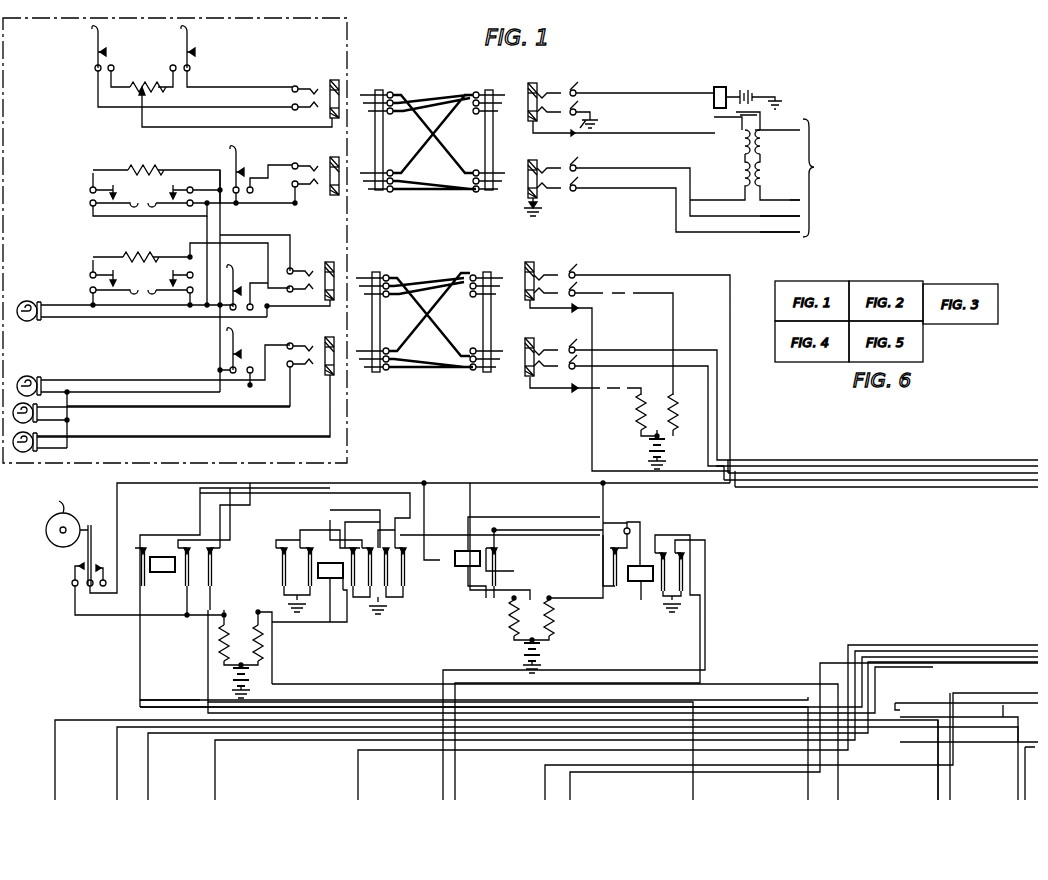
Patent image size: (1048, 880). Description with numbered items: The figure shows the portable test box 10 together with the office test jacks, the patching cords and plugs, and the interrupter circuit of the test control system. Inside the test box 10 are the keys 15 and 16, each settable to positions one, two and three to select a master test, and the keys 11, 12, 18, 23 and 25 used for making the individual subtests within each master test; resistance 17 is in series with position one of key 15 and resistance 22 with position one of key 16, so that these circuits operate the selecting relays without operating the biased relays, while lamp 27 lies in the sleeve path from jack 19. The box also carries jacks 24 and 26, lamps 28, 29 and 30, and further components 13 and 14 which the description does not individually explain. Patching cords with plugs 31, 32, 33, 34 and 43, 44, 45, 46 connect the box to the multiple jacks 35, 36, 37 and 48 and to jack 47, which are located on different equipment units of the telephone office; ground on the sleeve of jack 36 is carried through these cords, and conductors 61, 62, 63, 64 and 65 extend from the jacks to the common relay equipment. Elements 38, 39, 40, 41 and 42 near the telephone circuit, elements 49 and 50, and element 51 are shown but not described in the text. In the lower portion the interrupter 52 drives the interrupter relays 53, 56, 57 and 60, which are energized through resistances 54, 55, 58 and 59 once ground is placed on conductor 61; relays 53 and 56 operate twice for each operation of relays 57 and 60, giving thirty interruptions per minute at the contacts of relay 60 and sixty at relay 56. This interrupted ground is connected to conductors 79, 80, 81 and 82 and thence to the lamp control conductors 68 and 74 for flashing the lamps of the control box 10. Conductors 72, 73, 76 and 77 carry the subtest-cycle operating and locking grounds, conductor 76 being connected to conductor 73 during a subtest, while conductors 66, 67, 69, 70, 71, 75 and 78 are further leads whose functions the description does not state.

The test box 10 is at (175, 240).
The key 11 is at (106, 38).
The key 12 is at (195, 38).
The potentiometer 13 is at (144, 75).
The jack 14 is at (315, 93).
The key 15 is at (193, 194).
The key 16 is at (141, 282).
The resistance 17 is at (143, 162).
The key 18 is at (242, 156).
The jack 19 is at (315, 173).
The resistance 22 is at (145, 250).
The key 23 is at (239, 275).
The jack 24 is at (299, 283).
The key 25 is at (239, 338).
The jack 26 is at (185, 378).
The lamp 27 is at (30, 298).
The lamp 28 is at (30, 373).
The lamp 29 is at (14, 405).
The lamp 30 is at (14, 440).
The plug 31 is at (372, 134).
The plug 32 is at (372, 173).
The plug 33 is at (452, 134).
The plug 34 is at (492, 173).
The jack 35 is at (621, 104).
The jack 36 is at (662, 191).
The multiple jack 37 is at (726, 90).
The transformer 38 is at (752, 134).
The telephone circuit 39 is at (790, 128).
The conductor 40 is at (782, 205).
The conductor 41 is at (766, 217).
The conductor 42 is at (787, 233).
The plug 43 is at (368, 316).
The plug 44 is at (368, 353).
The plug 45 is at (449, 316).
The plug 46 is at (490, 353).
The jack 47 is at (627, 370).
The jack 48 is at (630, 400).
The resistor 49 is at (635, 408).
The resistor 50 is at (686, 408).
The bell 51 is at (62, 512).
The interrupter 52 is at (70, 572).
The relay 53 is at (160, 573).
The resistance 54 is at (218, 632).
The resistance 55 is at (265, 641).
The relay 56 is at (335, 580).
The relay 57 is at (468, 567).
The resistance 58 is at (509, 606).
The resistance 59 is at (556, 613).
The relay 60 is at (641, 582).
The conductor 61 is at (845, 460).
The conductor 62 is at (873, 466).
The conductor 63 is at (900, 473).
The conductor 64 is at (900, 480).
The conductor 65 is at (935, 487).
The conductor 66 is at (360, 757).
The conductor 67 is at (217, 747).
The lamp control conductor 68 is at (870, 657).
The conductor 69 is at (150, 740).
The conductor 70 is at (894, 665).
The conductor 71 is at (998, 690).
The conductor 72 is at (1025, 690).
The conductor 73 is at (970, 693).
The lamp control conductor 74 is at (959, 723).
The conductor 75 is at (52, 726).
The conductor 76 is at (114, 733).
The conductor 77 is at (1024, 791).
The conductor 78 is at (937, 791).
The conductor 79 is at (800, 697).
The conductor 80 is at (698, 703).
The conductor 81 is at (710, 636).
The conductor 82 is at (692, 636).